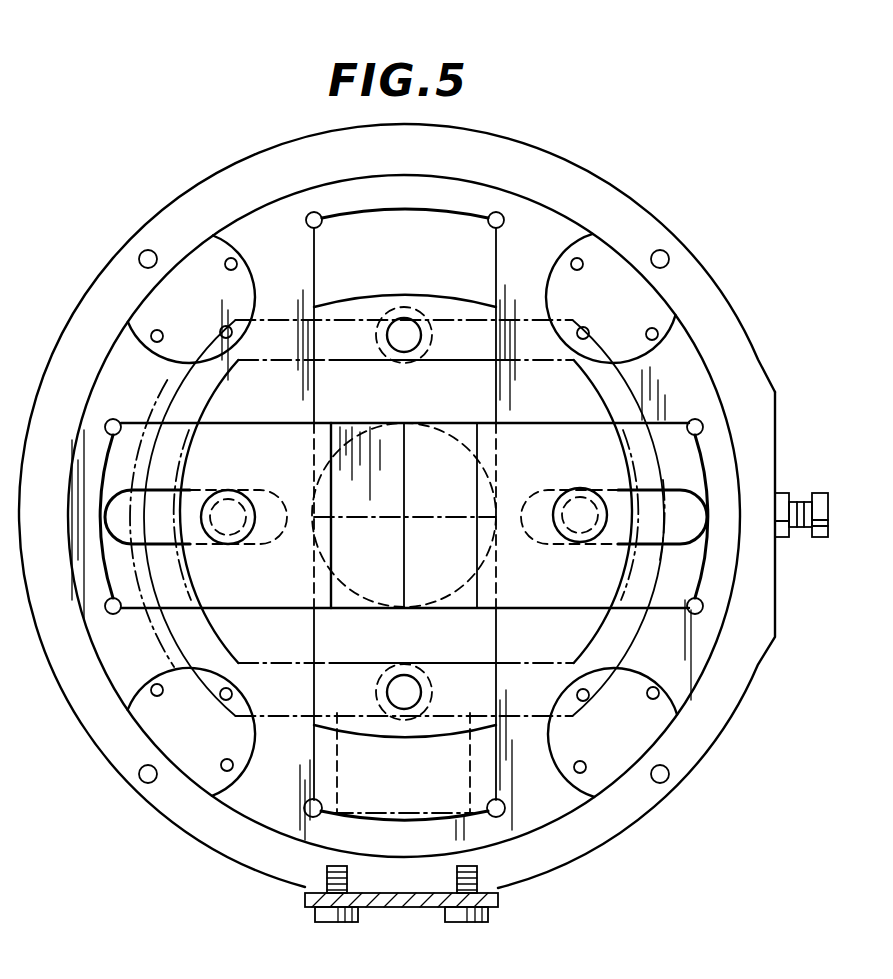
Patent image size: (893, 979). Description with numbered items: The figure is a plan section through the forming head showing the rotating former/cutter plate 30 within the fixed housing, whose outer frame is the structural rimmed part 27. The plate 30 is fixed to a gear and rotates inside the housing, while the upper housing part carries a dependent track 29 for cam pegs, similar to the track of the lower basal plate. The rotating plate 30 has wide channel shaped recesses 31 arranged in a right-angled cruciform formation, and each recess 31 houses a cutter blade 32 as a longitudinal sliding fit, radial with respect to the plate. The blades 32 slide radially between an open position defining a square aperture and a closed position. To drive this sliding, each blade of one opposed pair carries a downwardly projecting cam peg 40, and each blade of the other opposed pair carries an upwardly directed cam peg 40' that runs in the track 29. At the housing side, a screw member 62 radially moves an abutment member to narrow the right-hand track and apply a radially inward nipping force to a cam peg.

The structural rimmed part 27 is at (255, 853).
The dependent track 29 is at (538, 318).
The former/cutter plate 30 is at (532, 230).
The channel shaped recess 31 is at (318, 262).
The cutter blade 32 is at (457, 397).
The downwardly projecting cam peg 40 is at (406, 523).
The upwardly directed cam peg 40' is at (426, 487).
The screw member 62 is at (800, 527).